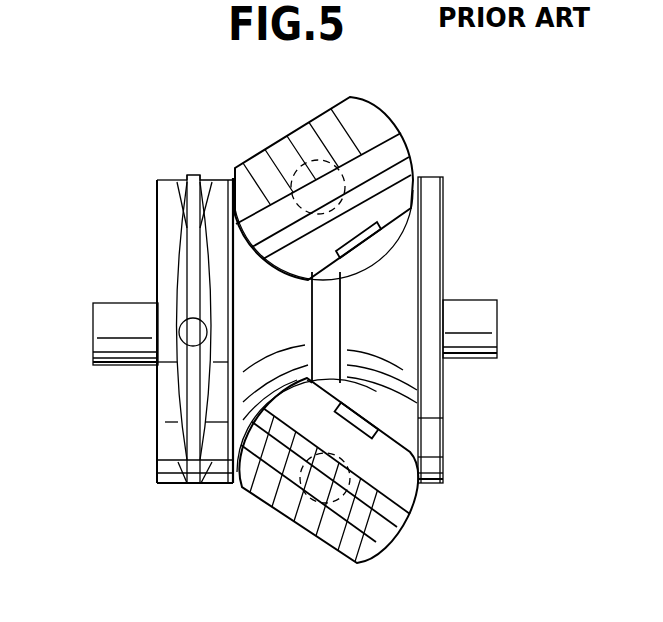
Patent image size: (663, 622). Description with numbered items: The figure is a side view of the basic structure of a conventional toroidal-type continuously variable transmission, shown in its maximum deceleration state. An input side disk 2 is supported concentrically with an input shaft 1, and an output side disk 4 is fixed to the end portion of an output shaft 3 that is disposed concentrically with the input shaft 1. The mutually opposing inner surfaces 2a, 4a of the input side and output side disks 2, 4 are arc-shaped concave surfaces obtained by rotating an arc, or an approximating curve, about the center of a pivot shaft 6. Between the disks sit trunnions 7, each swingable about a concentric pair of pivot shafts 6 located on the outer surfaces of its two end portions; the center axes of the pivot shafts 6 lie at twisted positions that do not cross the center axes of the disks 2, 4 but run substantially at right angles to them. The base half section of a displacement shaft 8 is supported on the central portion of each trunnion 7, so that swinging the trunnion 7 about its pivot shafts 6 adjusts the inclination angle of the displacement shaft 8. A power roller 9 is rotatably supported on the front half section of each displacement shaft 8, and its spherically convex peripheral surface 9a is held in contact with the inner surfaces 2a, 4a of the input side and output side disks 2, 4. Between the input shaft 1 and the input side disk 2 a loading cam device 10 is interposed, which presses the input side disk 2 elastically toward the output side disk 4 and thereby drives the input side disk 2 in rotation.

The input shaft 1 is at (103, 333).
The input side disk 2 is at (222, 197).
The inner surface of input side disk 2a is at (252, 487).
The output shaft 3 is at (483, 323).
The output side disk 4 is at (432, 256).
The inner surface of output side disk 4a is at (398, 428).
The pivot shaft 6 is at (290, 138).
The trunnion 7 is at (386, 124).
The displacement shaft 8 is at (374, 244).
The power roller 9 is at (395, 208).
The peripheral surface of power roller 9a is at (283, 270).
The loading cam device 10 is at (171, 170).